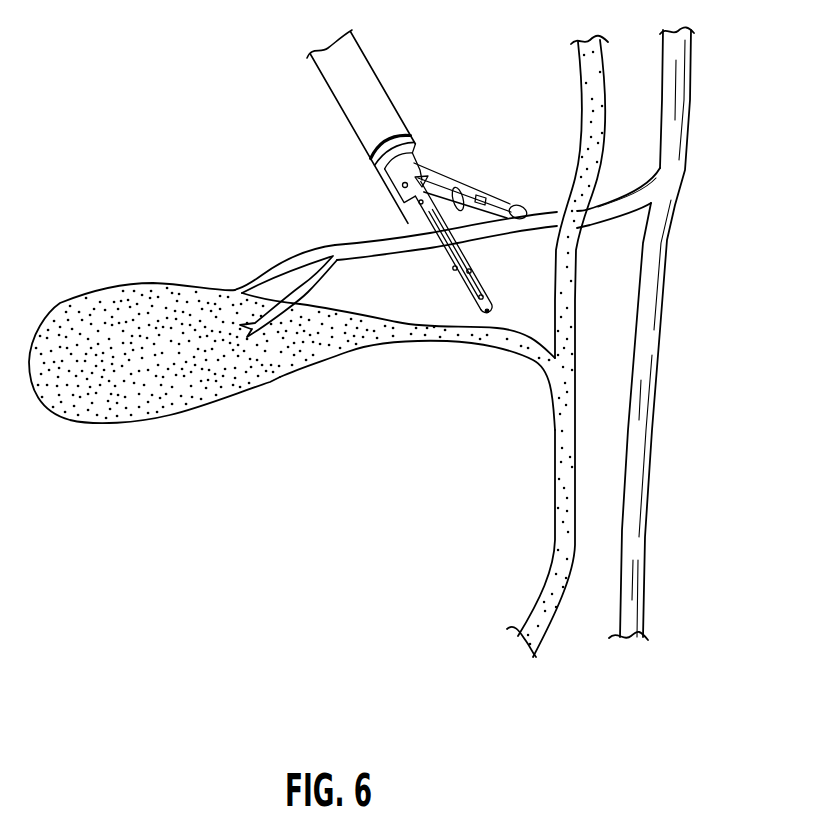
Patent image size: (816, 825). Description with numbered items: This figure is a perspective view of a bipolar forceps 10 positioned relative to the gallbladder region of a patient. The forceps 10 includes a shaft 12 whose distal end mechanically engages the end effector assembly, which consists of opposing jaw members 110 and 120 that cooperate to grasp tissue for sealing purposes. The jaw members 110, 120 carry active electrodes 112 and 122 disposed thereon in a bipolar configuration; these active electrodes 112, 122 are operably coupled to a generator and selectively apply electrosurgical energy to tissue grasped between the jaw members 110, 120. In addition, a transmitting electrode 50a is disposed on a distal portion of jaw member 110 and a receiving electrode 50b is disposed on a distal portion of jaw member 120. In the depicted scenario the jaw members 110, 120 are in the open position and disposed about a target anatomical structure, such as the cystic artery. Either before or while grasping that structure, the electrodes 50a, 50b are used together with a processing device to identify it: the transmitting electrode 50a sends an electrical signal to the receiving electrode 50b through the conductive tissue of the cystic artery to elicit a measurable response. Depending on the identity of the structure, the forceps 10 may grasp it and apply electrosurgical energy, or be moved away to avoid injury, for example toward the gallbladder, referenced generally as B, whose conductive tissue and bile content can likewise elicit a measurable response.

The bipolar forceps 10 is at (316, 111).
The shaft 12 is at (363, 55).
The jaw member 110 is at (485, 179).
The active electrode 112 is at (463, 187).
The jaw member 120 is at (397, 224).
The active electrode 122 is at (446, 270).
The transmitting electrode 50a is at (514, 224).
The receiving electrode 50b is at (488, 306).
The gallbladder B is at (111, 286).